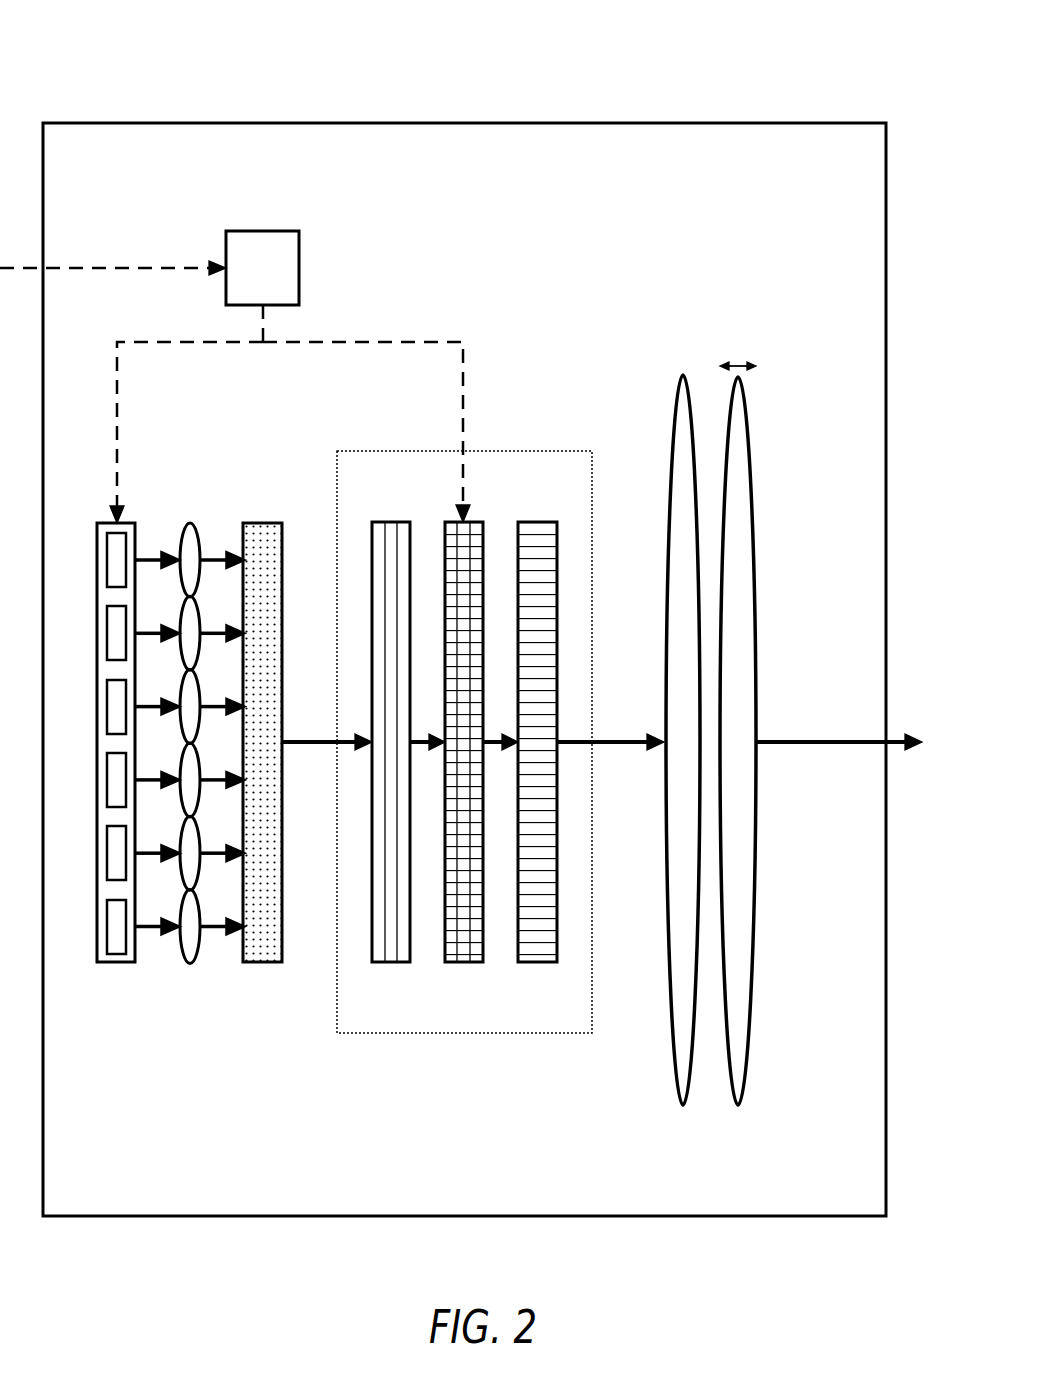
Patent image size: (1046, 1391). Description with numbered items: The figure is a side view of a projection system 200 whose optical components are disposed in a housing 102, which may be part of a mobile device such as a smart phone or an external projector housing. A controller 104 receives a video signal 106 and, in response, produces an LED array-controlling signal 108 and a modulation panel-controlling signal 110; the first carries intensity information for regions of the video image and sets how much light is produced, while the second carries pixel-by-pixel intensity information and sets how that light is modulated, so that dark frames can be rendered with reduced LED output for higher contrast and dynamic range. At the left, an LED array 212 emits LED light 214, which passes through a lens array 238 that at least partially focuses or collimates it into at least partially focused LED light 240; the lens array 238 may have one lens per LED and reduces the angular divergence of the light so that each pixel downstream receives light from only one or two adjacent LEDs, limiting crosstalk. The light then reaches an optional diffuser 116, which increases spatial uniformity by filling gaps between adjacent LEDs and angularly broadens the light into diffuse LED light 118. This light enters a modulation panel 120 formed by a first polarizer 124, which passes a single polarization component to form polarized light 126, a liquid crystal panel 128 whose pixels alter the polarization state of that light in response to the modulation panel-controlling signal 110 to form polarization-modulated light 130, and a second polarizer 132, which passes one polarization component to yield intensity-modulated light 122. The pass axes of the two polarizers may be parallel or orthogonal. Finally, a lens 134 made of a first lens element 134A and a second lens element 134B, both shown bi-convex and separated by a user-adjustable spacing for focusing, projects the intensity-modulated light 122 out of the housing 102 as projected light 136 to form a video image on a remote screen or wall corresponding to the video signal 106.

The projection system 200 is at (167, 63).
The housing 102 is at (463, 123).
The controller 104 is at (263, 231).
The video signal 106 is at (153, 268).
The LED array-controlling signal 108 is at (228, 343).
The modulation panel-controlling signal 110 is at (398, 343).
The diffuser 116 is at (263, 962).
The diffuse LED light 118 is at (305, 735).
The modulation panel 120 is at (464, 776).
The intensity-modulated light 122 is at (627, 740).
The first polarizer 124 is at (392, 962).
The polarized light 126 is at (433, 735).
The liquid crystal panel 128 is at (463, 962).
The polarization-modulated light 130 is at (503, 735).
The second polarizer 132 is at (537, 962).
The lens 134 is at (710, 768).
The first lens element 134A is at (681, 1108).
The second lens element 134B is at (740, 1108).
The projected light 136 is at (810, 740).
The LED array 212 is at (134, 742).
The LED light 214 is at (150, 553).
The lens array 238 is at (207, 742).
The at least partially focused LED light 240 is at (222, 553).